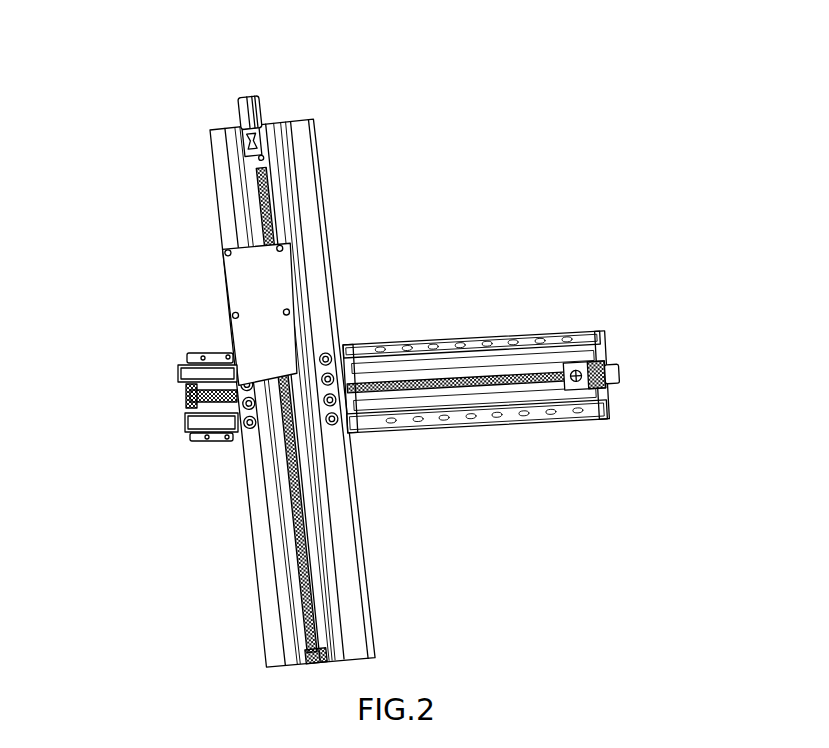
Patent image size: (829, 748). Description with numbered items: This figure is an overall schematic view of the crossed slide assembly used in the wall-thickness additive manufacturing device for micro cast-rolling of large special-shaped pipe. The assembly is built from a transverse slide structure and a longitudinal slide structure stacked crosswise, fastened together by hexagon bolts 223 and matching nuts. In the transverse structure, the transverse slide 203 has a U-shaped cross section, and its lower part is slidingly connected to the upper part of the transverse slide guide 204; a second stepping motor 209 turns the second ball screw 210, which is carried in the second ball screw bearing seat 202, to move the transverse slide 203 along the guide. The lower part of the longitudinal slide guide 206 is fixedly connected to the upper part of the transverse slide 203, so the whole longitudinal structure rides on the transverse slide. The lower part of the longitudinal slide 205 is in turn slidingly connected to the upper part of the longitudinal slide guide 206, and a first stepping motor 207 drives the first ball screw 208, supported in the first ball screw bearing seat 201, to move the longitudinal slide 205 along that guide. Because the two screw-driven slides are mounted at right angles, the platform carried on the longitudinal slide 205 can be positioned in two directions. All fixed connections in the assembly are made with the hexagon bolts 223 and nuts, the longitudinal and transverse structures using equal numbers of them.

The first ball screw bearing seat 201 is at (323, 653).
The second ball screw bearing seat 202 is at (185, 400).
The transverse slide 203 is at (354, 346).
The transverse slide guide 204 is at (190, 433).
The longitudinal slide 205 is at (260, 356).
The longitudinal slide guide 206 is at (220, 148).
The first stepping motor 207 is at (247, 100).
The first ball screw 208 is at (263, 192).
The second stepping motor 209 is at (618, 373).
The second ball screw 210 is at (540, 377).
The hexagon bolt 223 is at (332, 418).